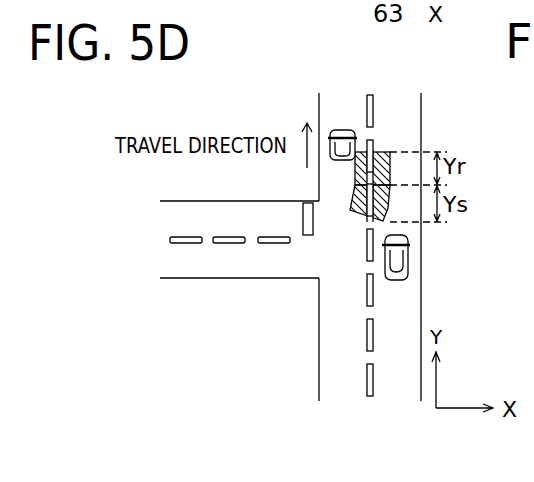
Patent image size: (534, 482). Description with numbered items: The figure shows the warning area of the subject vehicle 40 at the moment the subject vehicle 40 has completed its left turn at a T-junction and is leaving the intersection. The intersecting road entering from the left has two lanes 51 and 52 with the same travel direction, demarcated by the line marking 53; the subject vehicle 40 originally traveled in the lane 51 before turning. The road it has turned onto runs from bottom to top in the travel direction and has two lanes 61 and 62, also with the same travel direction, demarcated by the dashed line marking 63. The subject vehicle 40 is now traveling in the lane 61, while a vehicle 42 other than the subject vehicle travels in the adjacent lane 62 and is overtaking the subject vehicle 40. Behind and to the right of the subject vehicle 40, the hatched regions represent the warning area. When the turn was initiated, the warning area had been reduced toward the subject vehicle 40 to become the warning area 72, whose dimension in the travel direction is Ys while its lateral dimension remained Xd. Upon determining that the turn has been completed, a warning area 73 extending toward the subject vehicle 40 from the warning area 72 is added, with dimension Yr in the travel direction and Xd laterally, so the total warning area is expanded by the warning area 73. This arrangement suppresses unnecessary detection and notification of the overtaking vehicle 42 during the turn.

The subject vehicle 40 is at (333, 136).
The vehicle other than the subject vehicle 42 is at (407, 272).
The lane 51 is at (178, 215).
The lane 52 is at (168, 260).
The line marking 53 is at (178, 238).
The lane 61 is at (340, 104).
The lane 62 is at (398, 104).
The line marking 63 is at (373, 388).
The warning area 72 is at (383, 221).
The warning area 73 is at (389, 152).